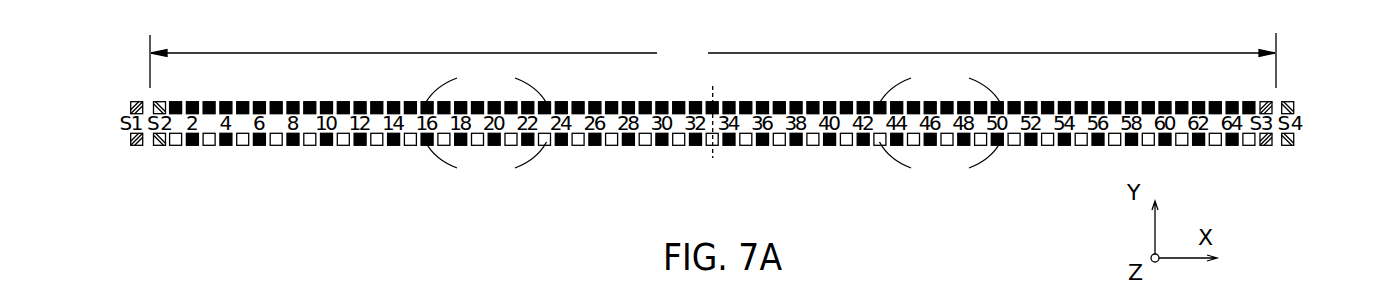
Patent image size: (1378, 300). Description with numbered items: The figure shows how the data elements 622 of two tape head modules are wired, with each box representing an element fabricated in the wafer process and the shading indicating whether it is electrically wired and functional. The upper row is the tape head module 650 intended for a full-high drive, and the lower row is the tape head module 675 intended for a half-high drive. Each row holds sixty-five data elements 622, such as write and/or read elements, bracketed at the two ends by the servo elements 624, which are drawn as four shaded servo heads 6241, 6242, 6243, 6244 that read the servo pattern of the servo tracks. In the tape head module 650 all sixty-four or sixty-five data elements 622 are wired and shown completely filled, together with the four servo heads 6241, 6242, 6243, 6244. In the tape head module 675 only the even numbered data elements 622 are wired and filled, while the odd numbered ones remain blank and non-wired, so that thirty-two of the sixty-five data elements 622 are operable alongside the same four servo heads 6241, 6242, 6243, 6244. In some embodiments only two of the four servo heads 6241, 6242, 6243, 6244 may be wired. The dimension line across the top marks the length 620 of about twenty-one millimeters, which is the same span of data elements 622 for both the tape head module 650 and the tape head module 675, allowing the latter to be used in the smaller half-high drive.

The length 620 is at (713, 60).
The data elements 622 is at (945, 165).
The servo elements 624 is at (703, 120).
The servo head 6241 is at (139, 146).
The servo head 6242 is at (158, 146).
The servo head 6243 is at (1263, 147).
The servo head 6244 is at (1284, 147).
The tape head module 650 is at (128, 107).
The tape head module 675 is at (128, 140).